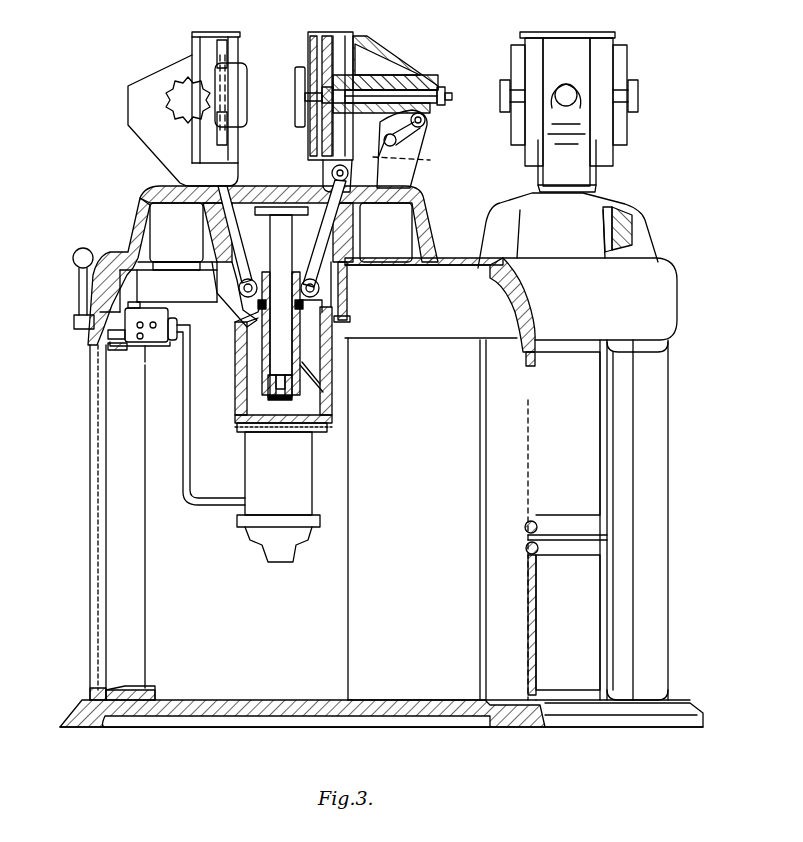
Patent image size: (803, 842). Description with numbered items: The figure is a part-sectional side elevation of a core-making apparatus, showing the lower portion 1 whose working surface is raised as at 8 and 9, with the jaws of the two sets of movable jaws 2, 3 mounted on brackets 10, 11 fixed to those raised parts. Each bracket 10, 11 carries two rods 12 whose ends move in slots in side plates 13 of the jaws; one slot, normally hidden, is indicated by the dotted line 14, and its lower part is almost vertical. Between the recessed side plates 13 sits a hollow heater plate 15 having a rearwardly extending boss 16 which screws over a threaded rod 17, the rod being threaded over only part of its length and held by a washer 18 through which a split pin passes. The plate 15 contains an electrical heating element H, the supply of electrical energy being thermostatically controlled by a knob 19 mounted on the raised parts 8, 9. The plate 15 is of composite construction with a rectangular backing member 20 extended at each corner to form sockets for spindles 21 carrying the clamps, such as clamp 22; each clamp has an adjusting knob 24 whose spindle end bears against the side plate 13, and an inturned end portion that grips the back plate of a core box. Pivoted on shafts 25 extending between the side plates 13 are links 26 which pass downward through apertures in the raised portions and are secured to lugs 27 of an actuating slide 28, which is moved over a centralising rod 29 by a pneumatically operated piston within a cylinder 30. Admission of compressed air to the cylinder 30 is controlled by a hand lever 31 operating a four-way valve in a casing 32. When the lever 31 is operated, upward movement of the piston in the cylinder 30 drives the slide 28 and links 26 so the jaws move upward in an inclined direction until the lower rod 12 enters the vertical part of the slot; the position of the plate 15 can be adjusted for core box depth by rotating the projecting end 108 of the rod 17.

The lower portion 1 is at (112, 465).
The set of movable jaws 2 is at (276, 107).
The set of movable jaws 3 is at (652, 104).
The raised part of working surface 8 is at (428, 235).
The raised part of working surface 9 is at (500, 213).
The bracket 10 is at (160, 166).
The bracket 11 is at (412, 184).
The rods 12 is at (397, 140).
The side plates 13 is at (330, 174).
The dotted line indicating slot 14 is at (420, 161).
The hollow heater plate 15 is at (310, 140).
The boss 16 is at (350, 95).
The threaded rod 17 is at (400, 95).
The washer 18 is at (427, 118).
The knob 19 is at (635, 222).
The rectangular backing member 20 is at (338, 36).
The spindles 21 is at (215, 50).
The clamp 22 is at (214, 76).
The adjusting knob 24 is at (180, 95).
The shafts 25 is at (386, 232).
The links 26 is at (215, 224).
The lugs 27 is at (320, 298).
The actuating slide 28 is at (300, 365).
The centralising rod 29 is at (280, 340).
The cylinder 30 is at (258, 470).
The hand lever 31 is at (92, 270).
The valve casing 32 is at (138, 342).
The projecting end of rod 108 is at (456, 84).
The electrical heating element H is at (298, 70).